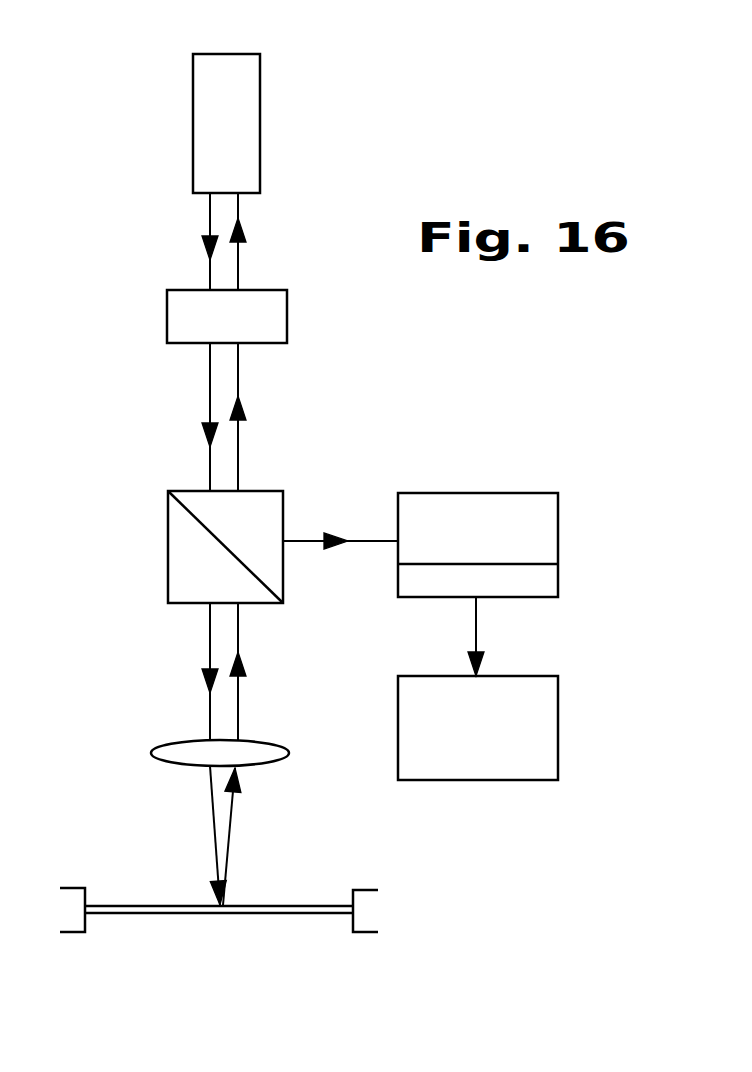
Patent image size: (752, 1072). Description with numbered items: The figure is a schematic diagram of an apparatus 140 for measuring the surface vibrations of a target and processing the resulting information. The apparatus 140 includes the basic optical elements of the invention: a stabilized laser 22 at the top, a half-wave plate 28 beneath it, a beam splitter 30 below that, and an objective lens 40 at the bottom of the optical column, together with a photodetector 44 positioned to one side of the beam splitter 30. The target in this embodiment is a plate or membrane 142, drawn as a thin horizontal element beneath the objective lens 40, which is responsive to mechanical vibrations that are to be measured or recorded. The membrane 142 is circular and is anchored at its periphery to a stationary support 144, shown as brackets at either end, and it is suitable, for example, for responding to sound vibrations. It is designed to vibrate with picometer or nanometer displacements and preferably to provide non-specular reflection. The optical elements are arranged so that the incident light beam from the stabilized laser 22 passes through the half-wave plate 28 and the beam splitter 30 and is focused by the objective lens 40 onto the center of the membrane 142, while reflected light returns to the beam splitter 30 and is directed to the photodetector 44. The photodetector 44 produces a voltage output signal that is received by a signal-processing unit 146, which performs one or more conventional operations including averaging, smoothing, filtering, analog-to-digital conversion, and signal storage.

The stabilized laser 22 is at (262, 105).
The half-wave plate 28 is at (288, 325).
The beam splitter 30 is at (285, 568).
The objective lens 40 is at (258, 768).
The photodetector 44 is at (512, 492).
The apparatus 140 is at (330, 460).
The plate or membrane 142 is at (263, 913).
The stationary support 144 is at (365, 888).
The signal-processing unit 146 is at (522, 780).